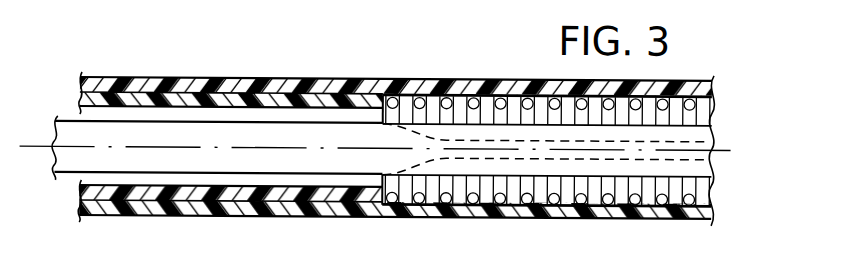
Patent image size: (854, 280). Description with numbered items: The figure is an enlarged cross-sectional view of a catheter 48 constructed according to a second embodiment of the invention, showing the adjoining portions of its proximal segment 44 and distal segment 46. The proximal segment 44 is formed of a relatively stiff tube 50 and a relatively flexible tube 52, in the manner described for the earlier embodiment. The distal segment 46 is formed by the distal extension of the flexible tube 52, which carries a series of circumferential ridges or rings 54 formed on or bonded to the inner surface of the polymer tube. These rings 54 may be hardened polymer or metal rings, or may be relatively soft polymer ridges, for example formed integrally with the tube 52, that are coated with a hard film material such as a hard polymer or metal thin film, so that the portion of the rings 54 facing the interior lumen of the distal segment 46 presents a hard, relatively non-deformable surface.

The proximal segment 44 is at (185, 76).
The catheter 48 is at (327, 76).
The distal segment 46 is at (451, 77).
The relatively stiff tube 50 is at (288, 195).
The relatively flexible tube 52 is at (414, 208).
The rings 54 is at (577, 185).